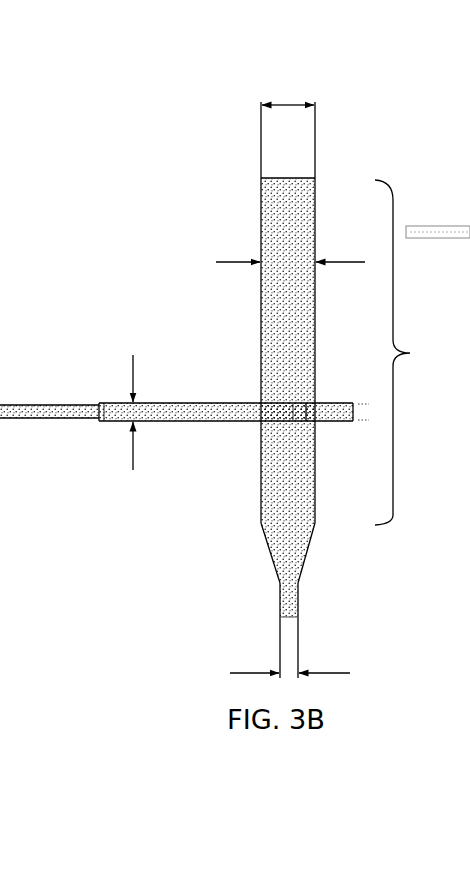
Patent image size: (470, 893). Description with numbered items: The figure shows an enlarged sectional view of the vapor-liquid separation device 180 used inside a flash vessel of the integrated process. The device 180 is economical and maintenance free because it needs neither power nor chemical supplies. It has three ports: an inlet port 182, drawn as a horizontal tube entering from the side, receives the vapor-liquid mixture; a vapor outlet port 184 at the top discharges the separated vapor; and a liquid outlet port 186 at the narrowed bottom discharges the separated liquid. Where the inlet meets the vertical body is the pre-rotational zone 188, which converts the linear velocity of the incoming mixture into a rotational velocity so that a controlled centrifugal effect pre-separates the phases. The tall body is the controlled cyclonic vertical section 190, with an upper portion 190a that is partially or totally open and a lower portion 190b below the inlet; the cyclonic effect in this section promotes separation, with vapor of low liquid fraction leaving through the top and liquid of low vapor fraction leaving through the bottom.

The vapor-liquid separation device 180 is at (132, 211).
The inlet port 182 is at (95, 411).
The vapor outlet port 184 is at (287, 174).
The liquid outlet port 186 is at (292, 622).
The pre-rotational zone 188 is at (286, 387).
The controlled cyclonic vertical section 190 is at (398, 366).
The upper portion 190a is at (344, 192).
The lower portion 190b is at (356, 516).